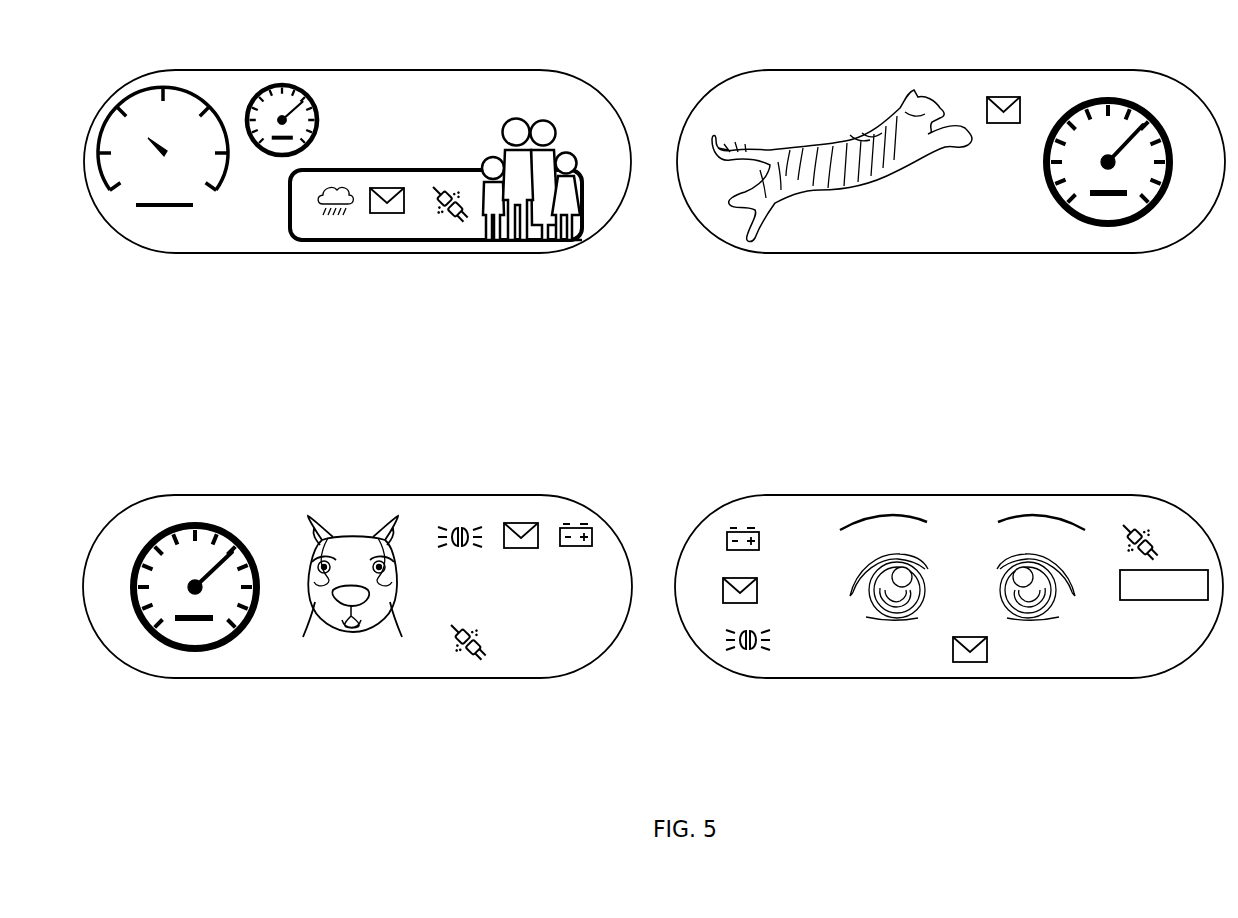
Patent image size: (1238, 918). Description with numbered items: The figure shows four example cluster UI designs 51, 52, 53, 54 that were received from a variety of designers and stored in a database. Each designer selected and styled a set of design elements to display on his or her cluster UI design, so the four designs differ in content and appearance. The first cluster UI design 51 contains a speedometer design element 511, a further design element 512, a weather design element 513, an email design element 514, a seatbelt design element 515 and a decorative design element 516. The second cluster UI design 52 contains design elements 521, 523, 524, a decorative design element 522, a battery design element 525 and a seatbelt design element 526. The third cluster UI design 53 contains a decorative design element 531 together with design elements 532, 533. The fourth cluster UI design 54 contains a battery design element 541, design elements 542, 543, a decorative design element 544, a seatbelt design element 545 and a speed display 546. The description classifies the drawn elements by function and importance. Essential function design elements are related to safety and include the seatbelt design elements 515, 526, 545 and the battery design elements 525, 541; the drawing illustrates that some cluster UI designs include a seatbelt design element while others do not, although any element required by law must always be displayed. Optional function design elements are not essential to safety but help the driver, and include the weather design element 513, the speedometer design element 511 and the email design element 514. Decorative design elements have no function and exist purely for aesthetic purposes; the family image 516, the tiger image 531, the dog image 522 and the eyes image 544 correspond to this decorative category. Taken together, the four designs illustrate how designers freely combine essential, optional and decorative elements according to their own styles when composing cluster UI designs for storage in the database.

The cluster UI design 51 is at (597, 230).
The speedometer design element 511 is at (205, 100).
The design element 512 is at (307, 90).
The weather design element 513 is at (321, 204).
The email design element 514 is at (392, 215).
The seatbelt design element 515 is at (448, 214).
The decorative design element 516 is at (550, 120).
The cluster UI design 53 is at (1188, 230).
The decorative design element 531 is at (888, 110).
The design element 532 is at (1005, 95).
The design element 533 is at (1128, 95).
The cluster UI design 52 is at (598, 657).
The design element 521 is at (222, 523).
The decorative design element 522 is at (352, 543).
The design element 523 is at (457, 527).
The design element 524 is at (523, 522).
The battery design element 525 is at (593, 524).
The seatbelt design element 526 is at (473, 652).
The cluster UI design 54 is at (1190, 657).
The battery design element 541 is at (728, 530).
The design element 542 is at (758, 583).
The design element 543 is at (752, 652).
The decorative design element 544 is at (967, 537).
The seatbelt design element 545 is at (1157, 540).
The speed display 546 is at (1120, 587).